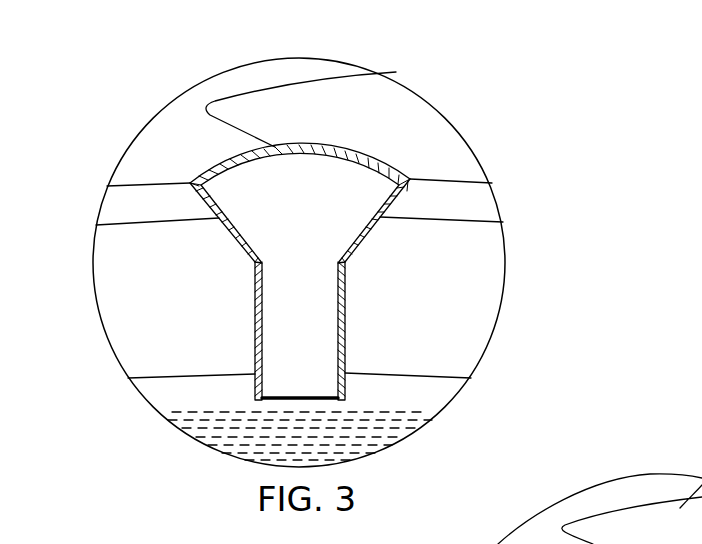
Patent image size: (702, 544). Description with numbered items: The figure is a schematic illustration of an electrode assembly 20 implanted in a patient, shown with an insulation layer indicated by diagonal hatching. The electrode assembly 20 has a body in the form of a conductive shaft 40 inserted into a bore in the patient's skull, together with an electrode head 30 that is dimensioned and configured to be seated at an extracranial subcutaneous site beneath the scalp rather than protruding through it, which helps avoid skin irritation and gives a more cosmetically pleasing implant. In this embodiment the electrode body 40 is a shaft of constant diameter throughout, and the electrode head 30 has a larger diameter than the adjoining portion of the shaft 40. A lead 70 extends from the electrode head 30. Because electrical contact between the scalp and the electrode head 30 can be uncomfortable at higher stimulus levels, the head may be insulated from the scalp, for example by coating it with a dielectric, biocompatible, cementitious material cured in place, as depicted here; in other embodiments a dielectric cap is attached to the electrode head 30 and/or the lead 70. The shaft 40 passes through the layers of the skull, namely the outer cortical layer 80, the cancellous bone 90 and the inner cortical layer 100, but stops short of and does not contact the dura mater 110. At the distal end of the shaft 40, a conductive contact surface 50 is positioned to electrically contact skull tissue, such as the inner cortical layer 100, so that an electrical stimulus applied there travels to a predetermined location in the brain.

The electrode assembly 20 is at (500, 212).
The electrode head 30 is at (323, 177).
The conductive shaft/electrode body 40 is at (350, 306).
The conductive contact surface 50 is at (327, 400).
The lead 70 is at (325, 78).
The outer cortical layer 80 is at (122, 203).
The cancellous bone 90 is at (122, 292).
The inner cortical layer 100 is at (170, 392).
The dura mater 110 is at (237, 437).